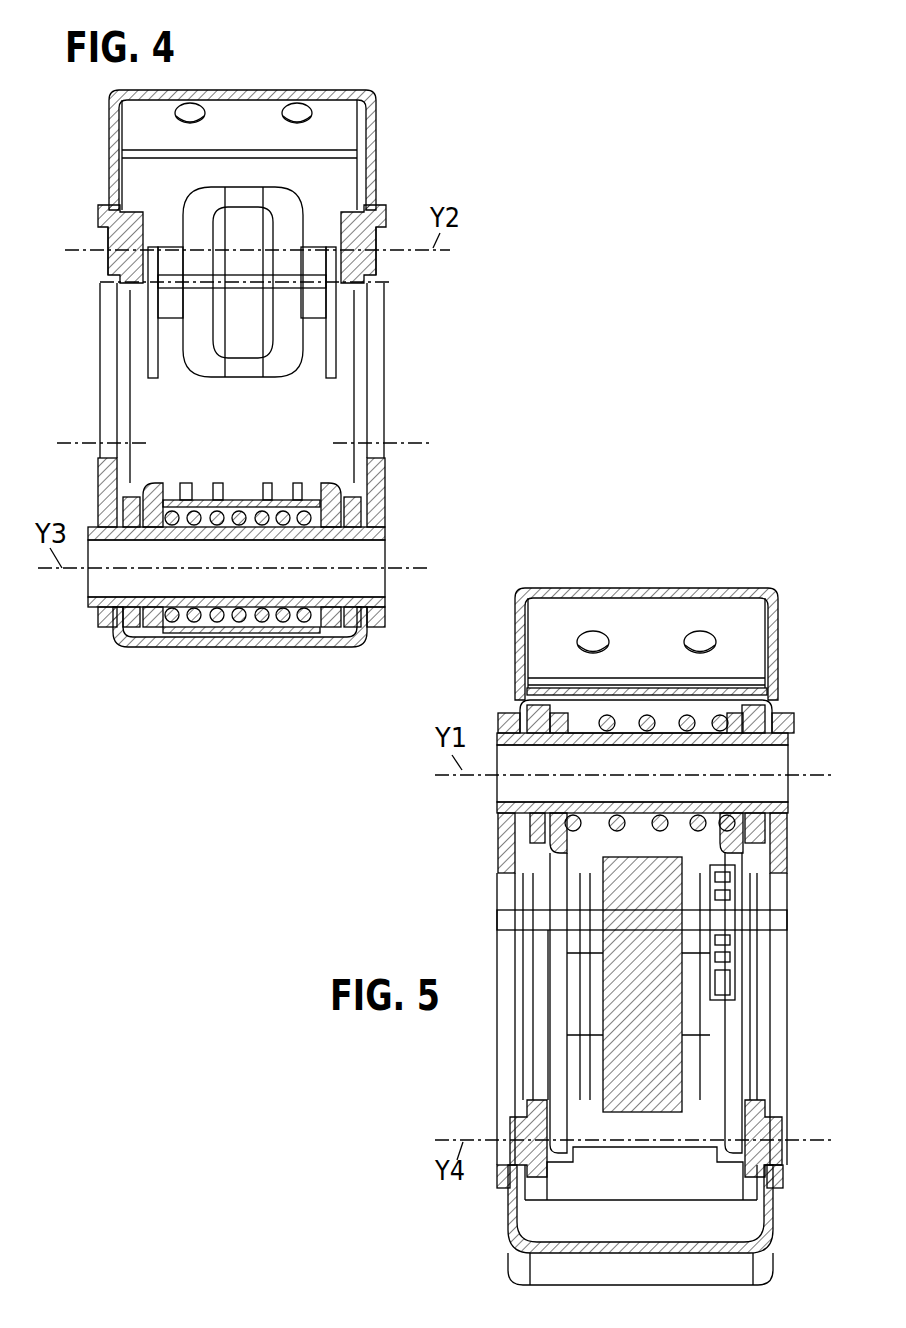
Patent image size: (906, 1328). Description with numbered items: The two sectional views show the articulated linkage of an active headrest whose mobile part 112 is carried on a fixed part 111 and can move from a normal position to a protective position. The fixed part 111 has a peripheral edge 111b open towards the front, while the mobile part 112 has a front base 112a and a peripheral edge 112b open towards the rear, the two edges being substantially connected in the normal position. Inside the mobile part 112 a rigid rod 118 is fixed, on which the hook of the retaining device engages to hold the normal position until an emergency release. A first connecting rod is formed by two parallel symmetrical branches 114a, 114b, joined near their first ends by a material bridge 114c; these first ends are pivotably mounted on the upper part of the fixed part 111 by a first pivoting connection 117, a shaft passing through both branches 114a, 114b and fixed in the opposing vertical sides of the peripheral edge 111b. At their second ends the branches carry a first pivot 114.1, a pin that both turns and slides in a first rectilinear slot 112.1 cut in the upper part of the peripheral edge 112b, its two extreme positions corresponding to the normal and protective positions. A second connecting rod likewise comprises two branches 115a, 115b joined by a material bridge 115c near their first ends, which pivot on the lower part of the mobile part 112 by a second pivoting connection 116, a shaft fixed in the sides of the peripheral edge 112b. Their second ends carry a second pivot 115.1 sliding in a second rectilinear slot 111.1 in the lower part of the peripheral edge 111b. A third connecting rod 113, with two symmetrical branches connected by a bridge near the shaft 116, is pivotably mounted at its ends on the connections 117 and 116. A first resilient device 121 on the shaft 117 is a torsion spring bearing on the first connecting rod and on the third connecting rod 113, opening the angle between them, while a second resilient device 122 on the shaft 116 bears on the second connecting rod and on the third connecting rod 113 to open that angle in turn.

In FIG. 5, the fixed part 111 is at (508, 1247).
In FIG. 5, the second rectilinear slot 111.1 is at (502, 982).
In FIG. 5, the peripheral edge 111b is at (505, 1210).
In FIG. 4, the mobile part 112 is at (281, 90).
In FIG. 5, the mobile part 112 is at (784, 589).
In FIG. 4, the first rectilinear slot 112.1 is at (112, 374).
In FIG. 4, the front base 112a is at (335, 188).
In FIG. 4, the peripheral edge 112b is at (376, 110).
In FIG. 4, the third connecting rod 113 is at (150, 486).
In FIG. 4, the branch of first connecting rod 114a is at (114, 203).
In FIG. 5, the branch of first connecting rod 114a is at (527, 717).
In FIG. 4, the branch of first connecting rod 114b is at (377, 204).
In FIG. 5, the branch of first connecting rod 114b is at (760, 720).
In FIG. 5, the material bridge 114c is at (668, 688).
In FIG. 4, the first pivot 114.1 is at (110, 263).
In FIG. 4, the branch of second connecting rod 115a is at (135, 506).
In FIG. 5, the branch of second connecting rod 115a is at (557, 838).
In FIG. 4, the branch of second connecting rod 115b is at (353, 513).
In FIG. 5, the branch of second connecting rod 115b is at (783, 857).
In FIG. 4, the material bridge 115c is at (212, 633).
In FIG. 5, the second pivot 115.1 is at (512, 1118).
In FIG. 4, the second pivoting connection 116 is at (107, 603).
In FIG. 5, the first pivoting connection 117 is at (783, 802).
In FIG. 4, the rigid rod 118 is at (238, 282).
In FIG. 5, the first resilient device 121 is at (720, 722).
In FIG. 4, the second resilient device 122 is at (274, 623).